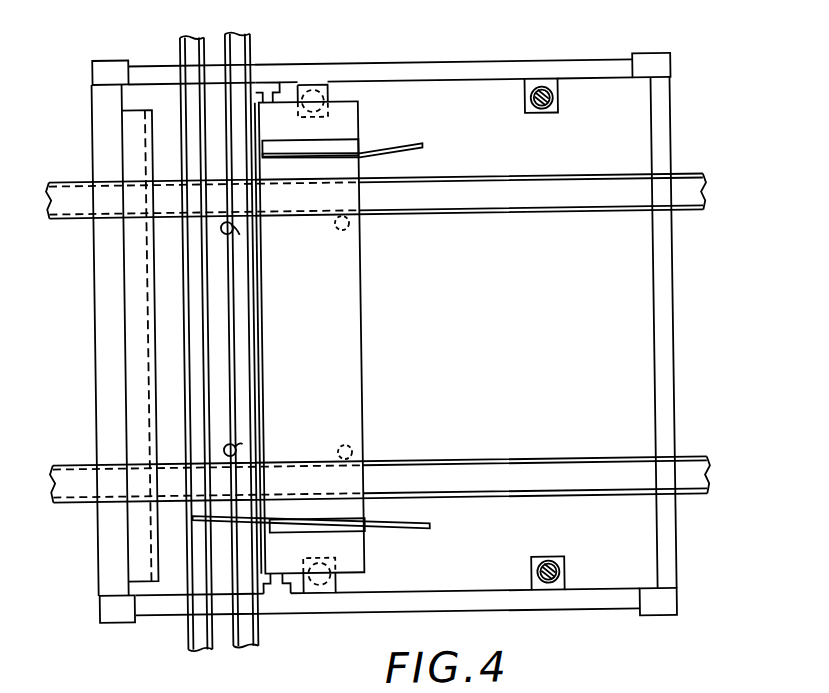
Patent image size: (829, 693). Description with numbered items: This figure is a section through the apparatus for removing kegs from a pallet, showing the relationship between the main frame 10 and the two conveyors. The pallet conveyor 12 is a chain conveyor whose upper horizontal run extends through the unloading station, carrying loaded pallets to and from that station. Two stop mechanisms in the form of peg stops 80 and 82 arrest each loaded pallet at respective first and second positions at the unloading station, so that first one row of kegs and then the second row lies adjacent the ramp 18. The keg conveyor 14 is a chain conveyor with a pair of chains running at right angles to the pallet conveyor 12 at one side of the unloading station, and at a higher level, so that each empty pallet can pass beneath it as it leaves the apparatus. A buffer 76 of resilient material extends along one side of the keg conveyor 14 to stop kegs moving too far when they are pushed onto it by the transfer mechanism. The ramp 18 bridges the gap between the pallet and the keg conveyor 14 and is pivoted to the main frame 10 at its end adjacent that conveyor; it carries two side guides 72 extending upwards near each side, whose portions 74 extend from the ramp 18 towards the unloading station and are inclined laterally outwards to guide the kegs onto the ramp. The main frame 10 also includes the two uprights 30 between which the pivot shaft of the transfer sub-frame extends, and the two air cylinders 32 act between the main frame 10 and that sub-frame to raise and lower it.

The main frame 10 is at (434, 69).
The pallet conveyor 12 is at (679, 194).
The keg conveyor 14 is at (218, 626).
The ramp 18 is at (347, 331).
The uprights 30 is at (112, 61).
The air cylinders 32 is at (555, 103).
The side guides 72 is at (322, 157).
The portions 74 is at (410, 152).
The buffer 76 is at (137, 144).
The peg stop 80 is at (341, 232).
The peg stop 82 is at (238, 230).